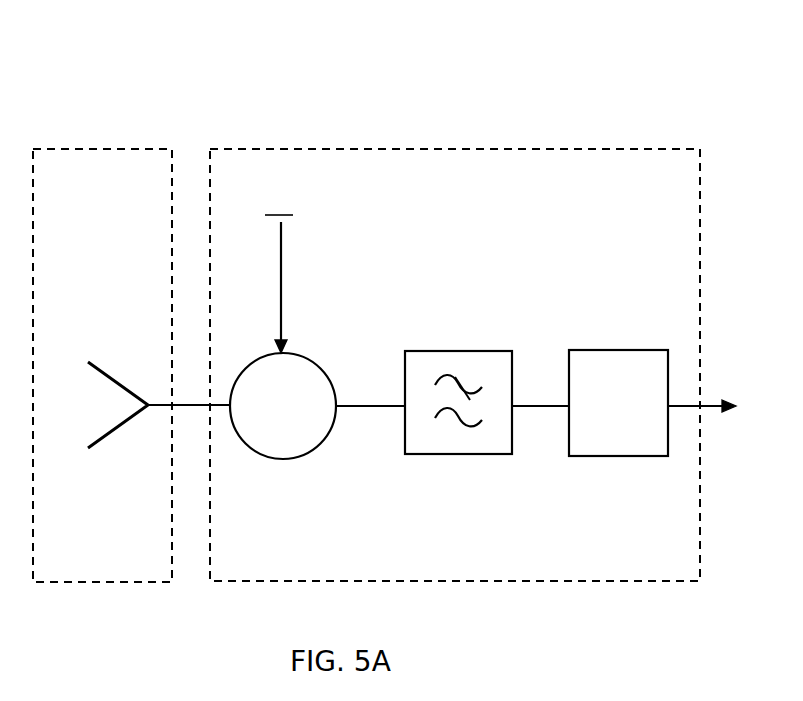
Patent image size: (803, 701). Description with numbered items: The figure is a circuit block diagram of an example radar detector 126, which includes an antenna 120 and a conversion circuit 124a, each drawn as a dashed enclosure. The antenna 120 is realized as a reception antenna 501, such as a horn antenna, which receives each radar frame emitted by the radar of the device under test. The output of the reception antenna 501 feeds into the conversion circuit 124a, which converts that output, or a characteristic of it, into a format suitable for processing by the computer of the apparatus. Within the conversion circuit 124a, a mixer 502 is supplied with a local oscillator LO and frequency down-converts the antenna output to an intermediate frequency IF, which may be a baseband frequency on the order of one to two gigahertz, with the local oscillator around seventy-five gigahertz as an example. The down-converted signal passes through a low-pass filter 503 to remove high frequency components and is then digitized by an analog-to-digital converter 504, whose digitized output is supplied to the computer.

The antenna 120 is at (57, 149).
The radar detector 126 is at (383, 74).
The conversion circuit 124a is at (552, 149).
The reception (Rx) antenna 501 is at (113, 378).
The mixer 502 is at (328, 378).
The low-pass filter 503 is at (448, 351).
The analog-to-digital converter (ADC) 504 is at (622, 350).